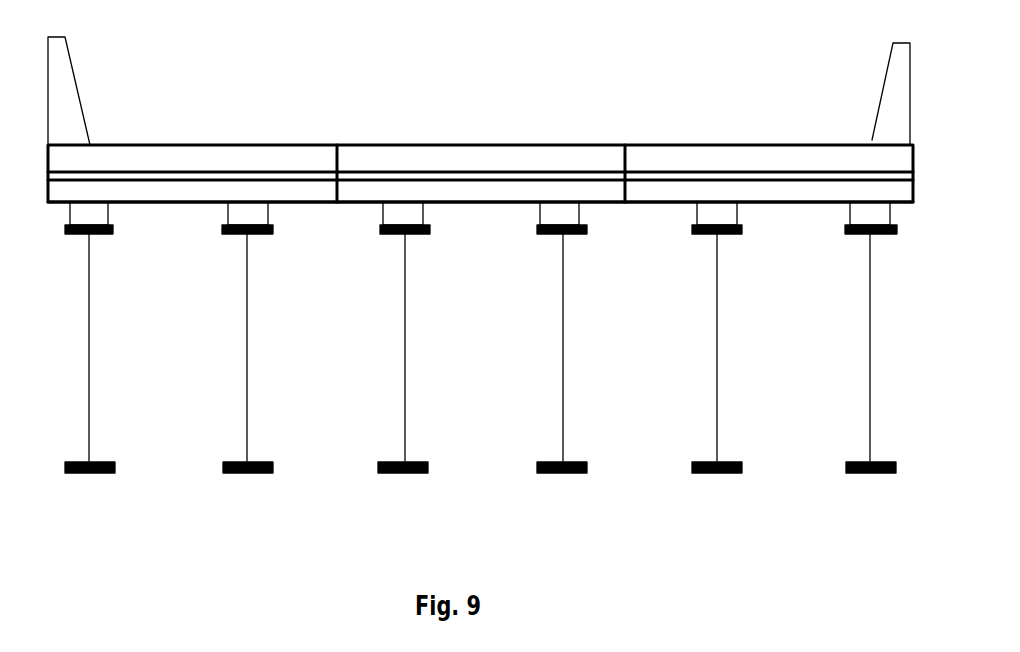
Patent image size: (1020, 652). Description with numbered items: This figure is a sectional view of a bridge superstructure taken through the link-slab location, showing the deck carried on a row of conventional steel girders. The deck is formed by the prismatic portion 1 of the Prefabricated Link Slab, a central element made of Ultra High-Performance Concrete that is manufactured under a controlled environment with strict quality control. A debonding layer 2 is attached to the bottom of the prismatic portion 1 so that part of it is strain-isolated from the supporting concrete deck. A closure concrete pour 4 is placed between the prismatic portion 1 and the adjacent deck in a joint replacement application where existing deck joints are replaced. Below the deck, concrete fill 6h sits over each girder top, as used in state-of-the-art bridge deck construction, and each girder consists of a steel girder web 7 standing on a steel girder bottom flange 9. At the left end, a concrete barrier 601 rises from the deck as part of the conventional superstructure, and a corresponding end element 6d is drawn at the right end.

The prismatic portion of the Prefabricated Link Slab 1 is at (200, 158).
The debonding layer 2 is at (270, 168).
The closure concrete pour 4 is at (156, 194).
The concrete barrier 601 is at (66, 68).
The right end wall 6d is at (886, 75).
The concrete fill 6h is at (118, 221).
The steel girder web 7 is at (91, 315).
The steel girder bottom flange 9 is at (106, 462).